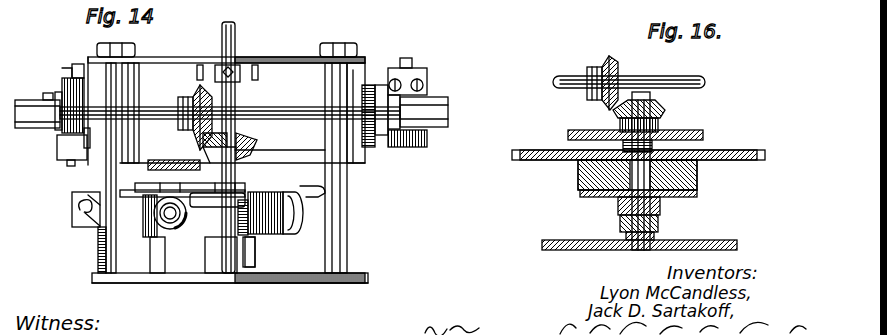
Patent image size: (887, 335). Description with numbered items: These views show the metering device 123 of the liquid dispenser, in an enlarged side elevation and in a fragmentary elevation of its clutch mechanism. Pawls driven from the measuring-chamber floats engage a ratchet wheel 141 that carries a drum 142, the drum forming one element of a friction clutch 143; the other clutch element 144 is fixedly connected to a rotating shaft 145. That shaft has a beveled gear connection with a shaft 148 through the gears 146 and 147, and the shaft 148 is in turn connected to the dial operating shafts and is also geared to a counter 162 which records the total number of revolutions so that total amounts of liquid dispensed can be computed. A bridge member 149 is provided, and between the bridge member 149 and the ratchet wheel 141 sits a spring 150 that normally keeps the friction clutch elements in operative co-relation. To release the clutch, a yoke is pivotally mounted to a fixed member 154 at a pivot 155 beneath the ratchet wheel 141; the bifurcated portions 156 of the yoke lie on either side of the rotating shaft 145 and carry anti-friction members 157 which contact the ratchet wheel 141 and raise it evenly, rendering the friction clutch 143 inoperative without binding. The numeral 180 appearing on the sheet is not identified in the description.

In FIG. 14, the metering device 123 is at (276, 284).
In FIG. 14, the ratchet wheel 141 is at (312, 190).
In FIG. 16, the ratchet wheel 141 is at (542, 182).
In FIG. 16, the drum 142 is at (744, 184).
In FIG. 14, the friction clutch 143 is at (300, 215).
In FIG. 16, the friction clutch 143 is at (690, 194).
In FIG. 14, the clutch element 144 is at (291, 260).
In FIG. 16, the clutch element 144 is at (698, 234).
In FIG. 16, the rotating shaft 145 is at (636, 202).
In FIG. 14, the beveled gear 146 is at (258, 137).
In FIG. 16, the beveled gear 146 is at (612, 112).
In FIG. 14, the beveled gear 147 is at (197, 96).
In FIG. 16, the beveled gear 147 is at (607, 72).
In FIG. 14, the shaft 148 is at (154, 118).
In FIG. 16, the shaft 148 is at (683, 88).
In FIG. 16, the bridge member 149 is at (700, 135).
In FIG. 16, the spring 150 is at (652, 148).
In FIG. 14, the fixed member 154 is at (407, 4).
In FIG. 14, the pivot 155 is at (347, 4).
In FIG. 14, the bifurcated portions 156 is at (161, 230).
In FIG. 14, the anti-friction members 157 is at (183, 232).
In FIG. 14, the counter 162 is at (428, 84).
In FIG. 14, the member 180 is at (245, 4).